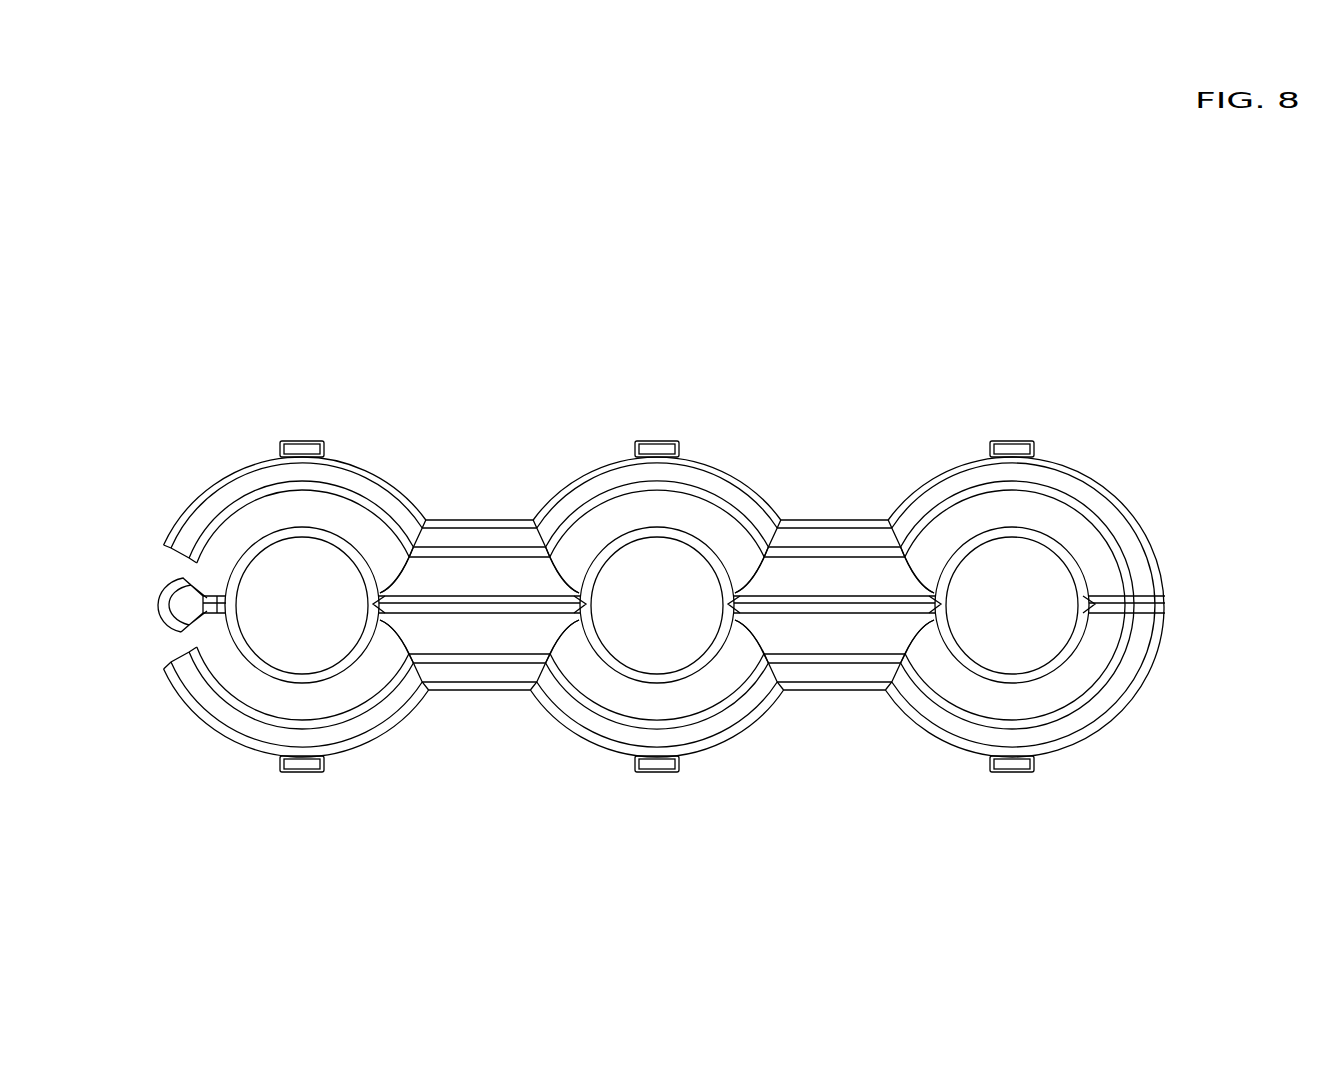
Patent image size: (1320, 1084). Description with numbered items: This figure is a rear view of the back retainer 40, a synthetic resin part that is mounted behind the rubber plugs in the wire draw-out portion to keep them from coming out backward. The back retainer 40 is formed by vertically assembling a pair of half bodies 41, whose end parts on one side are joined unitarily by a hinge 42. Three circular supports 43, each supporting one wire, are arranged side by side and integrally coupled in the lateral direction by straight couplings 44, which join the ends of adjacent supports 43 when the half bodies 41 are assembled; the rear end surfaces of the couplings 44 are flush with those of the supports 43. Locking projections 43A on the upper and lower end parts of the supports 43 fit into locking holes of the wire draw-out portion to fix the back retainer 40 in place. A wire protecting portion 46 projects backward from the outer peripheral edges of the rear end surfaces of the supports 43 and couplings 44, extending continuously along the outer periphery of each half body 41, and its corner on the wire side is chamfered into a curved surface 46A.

The back retainer 40 is at (708, 347).
The half body 41 is at (201, 458).
The hinge 42 is at (163, 592).
The support 43 is at (598, 522).
The locking projection 43A is at (301, 441).
The coupling 44 is at (479, 578).
The wire protecting portion 46 is at (734, 495).
The curved surface 46A is at (846, 563).